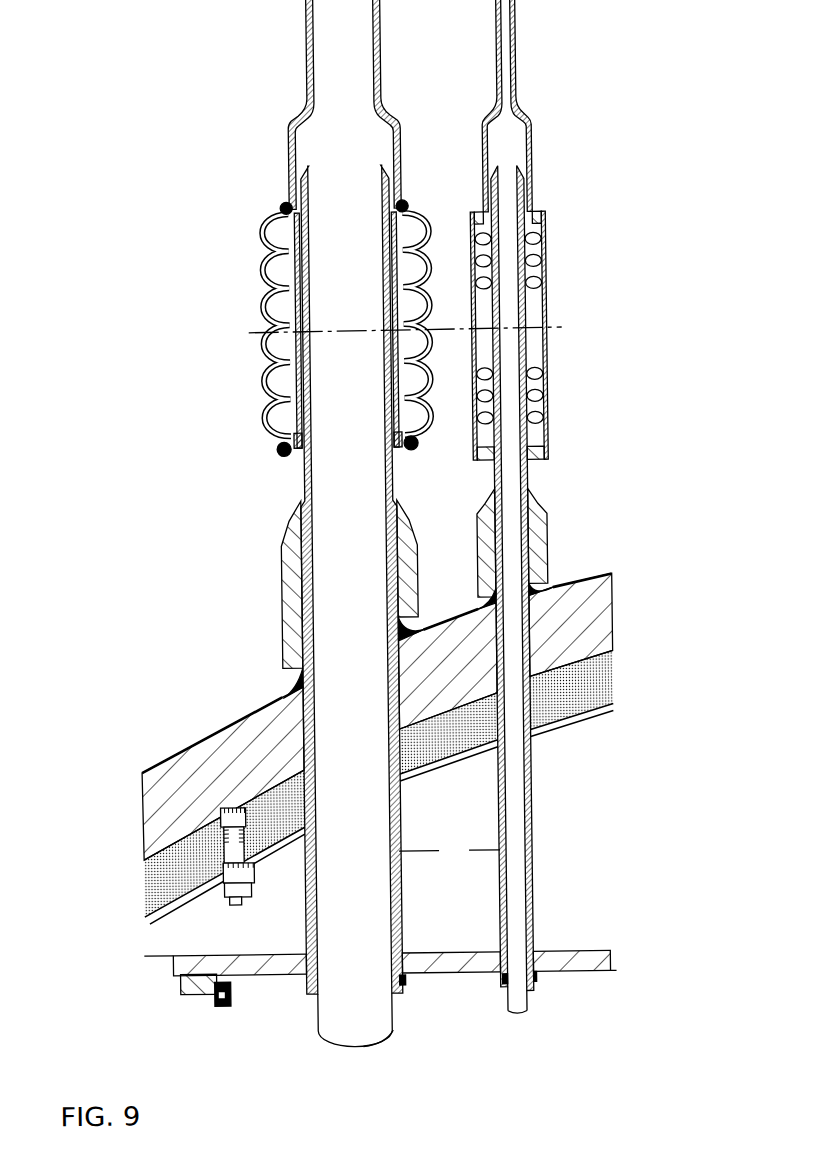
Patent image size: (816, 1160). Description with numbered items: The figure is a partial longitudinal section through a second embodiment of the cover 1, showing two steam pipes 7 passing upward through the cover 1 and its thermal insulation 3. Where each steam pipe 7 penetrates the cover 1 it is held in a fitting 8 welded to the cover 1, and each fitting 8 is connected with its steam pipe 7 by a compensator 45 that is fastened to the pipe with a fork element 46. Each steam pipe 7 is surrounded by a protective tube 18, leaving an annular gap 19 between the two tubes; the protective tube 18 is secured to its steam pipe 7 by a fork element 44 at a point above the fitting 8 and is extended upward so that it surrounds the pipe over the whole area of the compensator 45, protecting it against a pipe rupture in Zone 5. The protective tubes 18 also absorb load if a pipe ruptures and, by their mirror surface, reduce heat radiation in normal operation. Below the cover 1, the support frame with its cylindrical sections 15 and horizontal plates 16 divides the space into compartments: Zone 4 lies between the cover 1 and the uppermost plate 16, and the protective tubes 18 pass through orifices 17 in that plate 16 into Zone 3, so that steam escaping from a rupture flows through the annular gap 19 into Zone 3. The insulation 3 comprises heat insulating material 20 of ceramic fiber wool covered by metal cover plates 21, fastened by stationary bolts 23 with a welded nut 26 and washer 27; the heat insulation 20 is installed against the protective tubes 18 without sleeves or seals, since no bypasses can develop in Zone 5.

The cover 1 is at (570, 624).
The steam pipe 7 is at (347, 993).
The fitting 8 is at (292, 579).
The cylindrical section 15 is at (218, 993).
The horizontal plate 16 is at (576, 962).
The orifice 17 is at (532, 975).
The protective tube 18 is at (449, 848).
The annular gap 19 is at (498, 986).
The heat insulating material 20 is at (569, 680).
The cover plate 21 is at (572, 722).
The stationary bolt 23 is at (230, 840).
The nut 26 is at (220, 886).
The washer 27 is at (240, 875).
The fork element 44 is at (387, 180).
The compensator 45 is at (414, 238).
The fork element 46 is at (388, 115).
The Zone 5 is at (309, 429).
The Zone 4 is at (266, 930).
The Zone 3 is at (267, 1028).